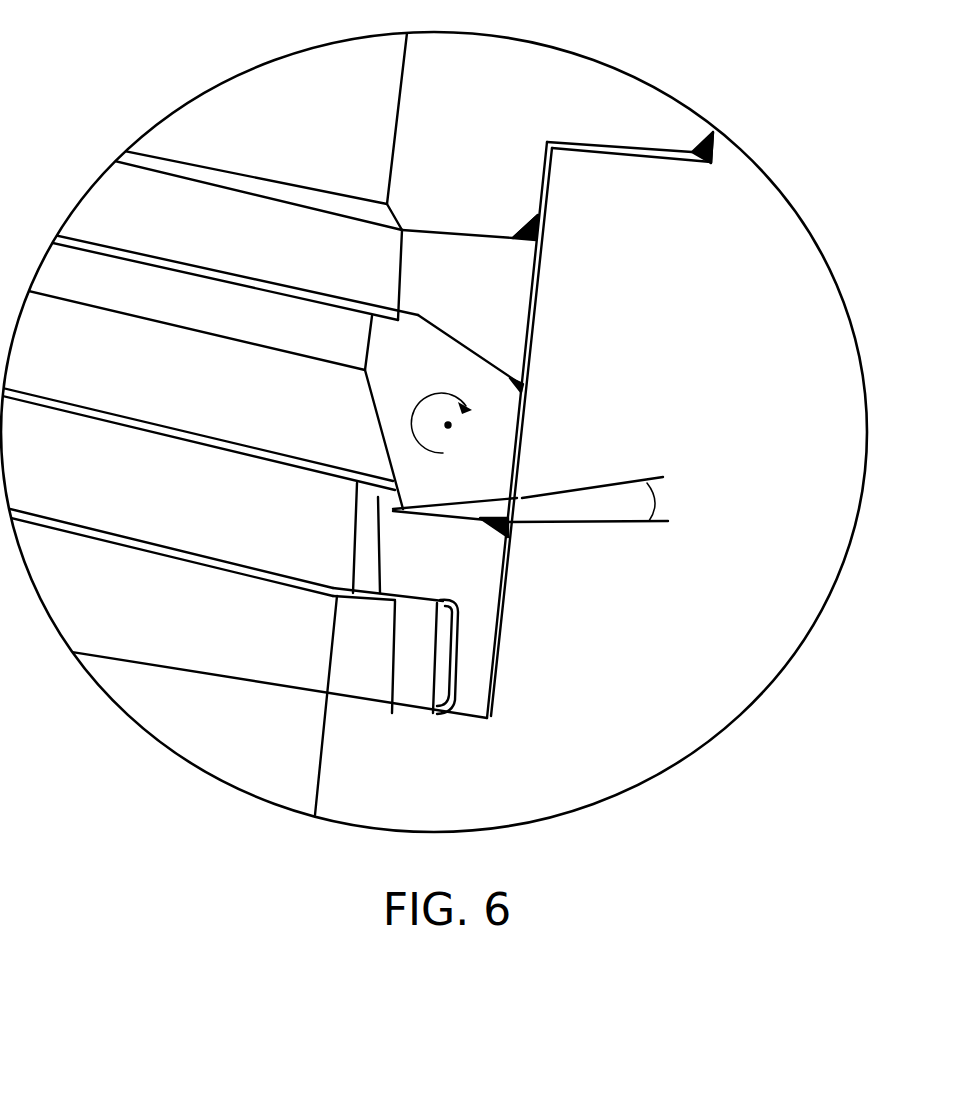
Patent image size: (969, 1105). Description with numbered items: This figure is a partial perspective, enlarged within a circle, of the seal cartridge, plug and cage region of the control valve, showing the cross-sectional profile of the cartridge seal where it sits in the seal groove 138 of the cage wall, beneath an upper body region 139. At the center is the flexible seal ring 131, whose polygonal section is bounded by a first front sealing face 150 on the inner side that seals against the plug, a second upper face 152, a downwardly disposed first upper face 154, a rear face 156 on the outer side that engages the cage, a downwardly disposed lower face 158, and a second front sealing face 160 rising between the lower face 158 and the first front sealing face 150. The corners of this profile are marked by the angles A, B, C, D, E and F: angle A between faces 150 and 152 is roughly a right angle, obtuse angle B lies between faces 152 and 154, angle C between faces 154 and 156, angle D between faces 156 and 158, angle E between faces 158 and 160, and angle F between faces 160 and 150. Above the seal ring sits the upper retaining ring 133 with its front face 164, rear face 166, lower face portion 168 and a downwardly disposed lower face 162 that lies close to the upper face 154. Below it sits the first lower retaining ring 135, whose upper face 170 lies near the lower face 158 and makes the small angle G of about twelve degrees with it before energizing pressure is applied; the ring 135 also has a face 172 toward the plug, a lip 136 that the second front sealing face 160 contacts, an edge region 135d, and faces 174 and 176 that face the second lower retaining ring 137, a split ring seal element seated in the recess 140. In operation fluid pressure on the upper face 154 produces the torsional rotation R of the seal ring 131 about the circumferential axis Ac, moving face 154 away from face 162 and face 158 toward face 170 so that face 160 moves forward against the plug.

The flexible seal ring 131 is at (493, 463).
The upper retaining ring 133 is at (462, 285).
The first lower retaining ring 135 is at (394, 568).
The block edge 135d is at (380, 600).
The lip 136 is at (363, 468).
The second lower retaining ring 137 is at (362, 688).
The seal groove 138 is at (550, 192).
The upper body 139 is at (456, 110).
The recess 140 is at (438, 703).
The first front sealing face 150 is at (239, 331).
The second upper face 152 is at (245, 277).
The first upper face 154 is at (458, 350).
The rear face 156 is at (500, 440).
The lower face 158 is at (505, 535).
The second front sealing face 160 is at (385, 412).
The lower face of upper retaining ring 162 is at (478, 350).
The front face of upper retaining ring 164 is at (403, 255).
The rear face of upper retaining ring 166 is at (537, 268).
The lower face portion 168 is at (412, 318).
The upper face of lower retaining ring 170 is at (510, 537).
The face toward plug 172 is at (378, 500).
The face toward second lower retaining ring 174 is at (457, 667).
The face toward second lower retaining ring 176 is at (438, 512).
The angle A is at (380, 330).
The obtuse angle B is at (422, 332).
The angle C is at (518, 392).
The angle D is at (505, 495).
The angle E is at (405, 510).
The angle F is at (373, 370).
The torsional rotation R is at (427, 410).
The circumferential axis Ac is at (448, 425).
The angle G is at (594, 499).